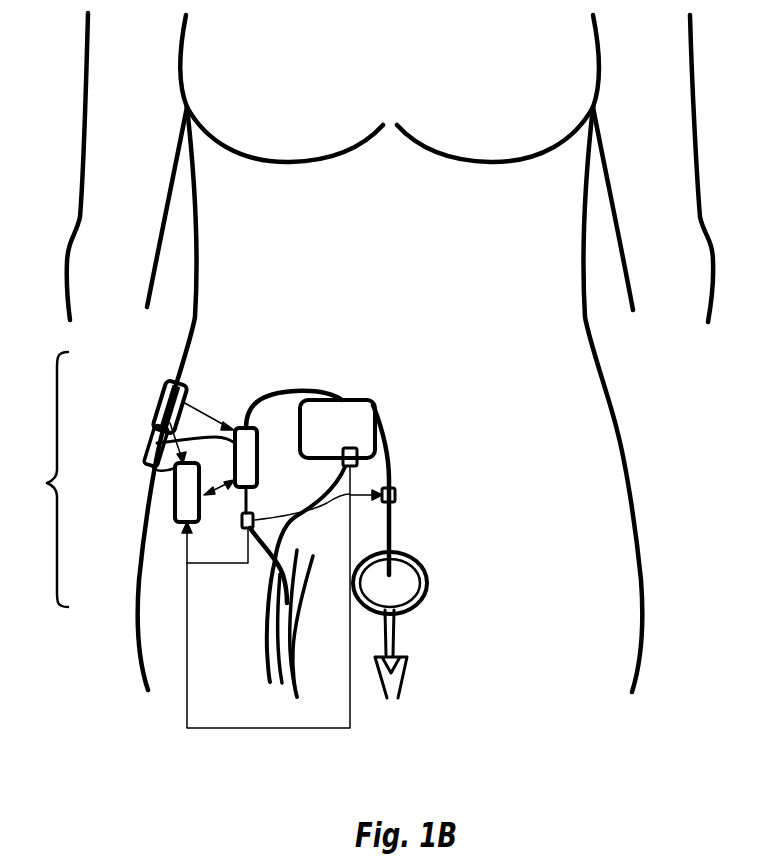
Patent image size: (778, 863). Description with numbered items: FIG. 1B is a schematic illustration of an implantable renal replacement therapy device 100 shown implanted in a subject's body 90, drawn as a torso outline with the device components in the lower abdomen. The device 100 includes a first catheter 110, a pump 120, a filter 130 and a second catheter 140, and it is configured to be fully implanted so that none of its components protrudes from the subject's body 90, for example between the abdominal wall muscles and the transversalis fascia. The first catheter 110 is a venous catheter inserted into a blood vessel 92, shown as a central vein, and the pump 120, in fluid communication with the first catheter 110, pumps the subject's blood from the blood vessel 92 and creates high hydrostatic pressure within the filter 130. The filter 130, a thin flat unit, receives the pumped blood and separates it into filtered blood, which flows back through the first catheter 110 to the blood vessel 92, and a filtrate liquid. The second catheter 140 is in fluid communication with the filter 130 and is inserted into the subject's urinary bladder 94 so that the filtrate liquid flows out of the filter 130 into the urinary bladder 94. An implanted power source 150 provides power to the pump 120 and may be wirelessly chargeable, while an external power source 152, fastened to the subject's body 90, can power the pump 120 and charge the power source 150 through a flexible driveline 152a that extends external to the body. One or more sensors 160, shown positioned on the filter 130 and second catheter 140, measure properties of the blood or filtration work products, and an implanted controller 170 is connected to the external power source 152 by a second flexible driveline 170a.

The subject's body 90 is at (85, 57).
The blood vessel 92 is at (281, 682).
The urinary bladder 94 is at (428, 582).
The implantable renal replacement therapy device 100 is at (192, 540).
The first catheter 110 is at (272, 580).
The pump 120 is at (248, 460).
The filter 130 is at (375, 403).
The second catheter 140 is at (392, 545).
The power source 150 is at (196, 391).
The external power source 152 is at (153, 400).
The flexible driveline 152a is at (150, 428).
The sensors 160 is at (358, 459).
The controller 170 is at (175, 500).
The flexible driveline 170a is at (147, 453).